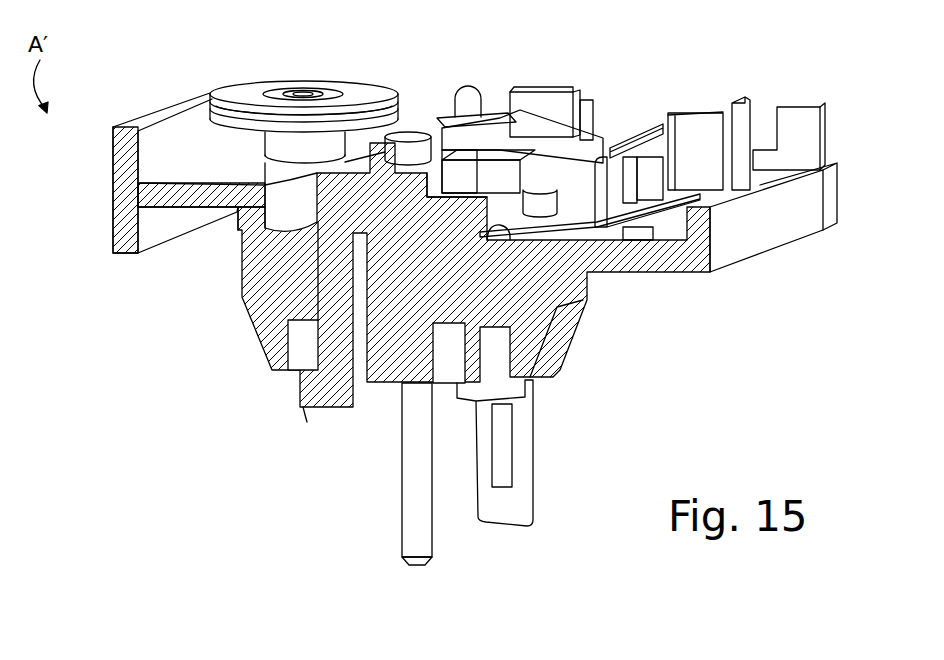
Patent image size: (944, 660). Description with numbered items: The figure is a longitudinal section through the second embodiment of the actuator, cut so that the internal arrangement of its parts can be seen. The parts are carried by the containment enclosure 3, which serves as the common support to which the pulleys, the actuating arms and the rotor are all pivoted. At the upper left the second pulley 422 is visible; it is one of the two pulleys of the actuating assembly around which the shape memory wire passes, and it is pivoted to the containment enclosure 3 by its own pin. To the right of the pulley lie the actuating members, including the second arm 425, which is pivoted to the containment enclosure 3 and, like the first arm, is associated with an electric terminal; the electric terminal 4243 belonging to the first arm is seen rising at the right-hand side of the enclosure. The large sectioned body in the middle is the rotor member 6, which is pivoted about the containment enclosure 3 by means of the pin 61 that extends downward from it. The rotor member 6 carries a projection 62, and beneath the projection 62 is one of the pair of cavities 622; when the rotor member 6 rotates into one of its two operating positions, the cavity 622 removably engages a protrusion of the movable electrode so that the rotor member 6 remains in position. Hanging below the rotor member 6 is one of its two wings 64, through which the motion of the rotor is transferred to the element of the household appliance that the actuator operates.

The containment enclosure 3 is at (830, 208).
The rotor member 6 is at (307, 420).
The pin 61 is at (415, 533).
The projection 62 is at (447, 232).
The cavity 622 is at (480, 237).
The wing 64 is at (530, 498).
The second pulley 422 is at (246, 100).
The second arm 425 is at (506, 140).
The electric terminal 4243 is at (740, 112).